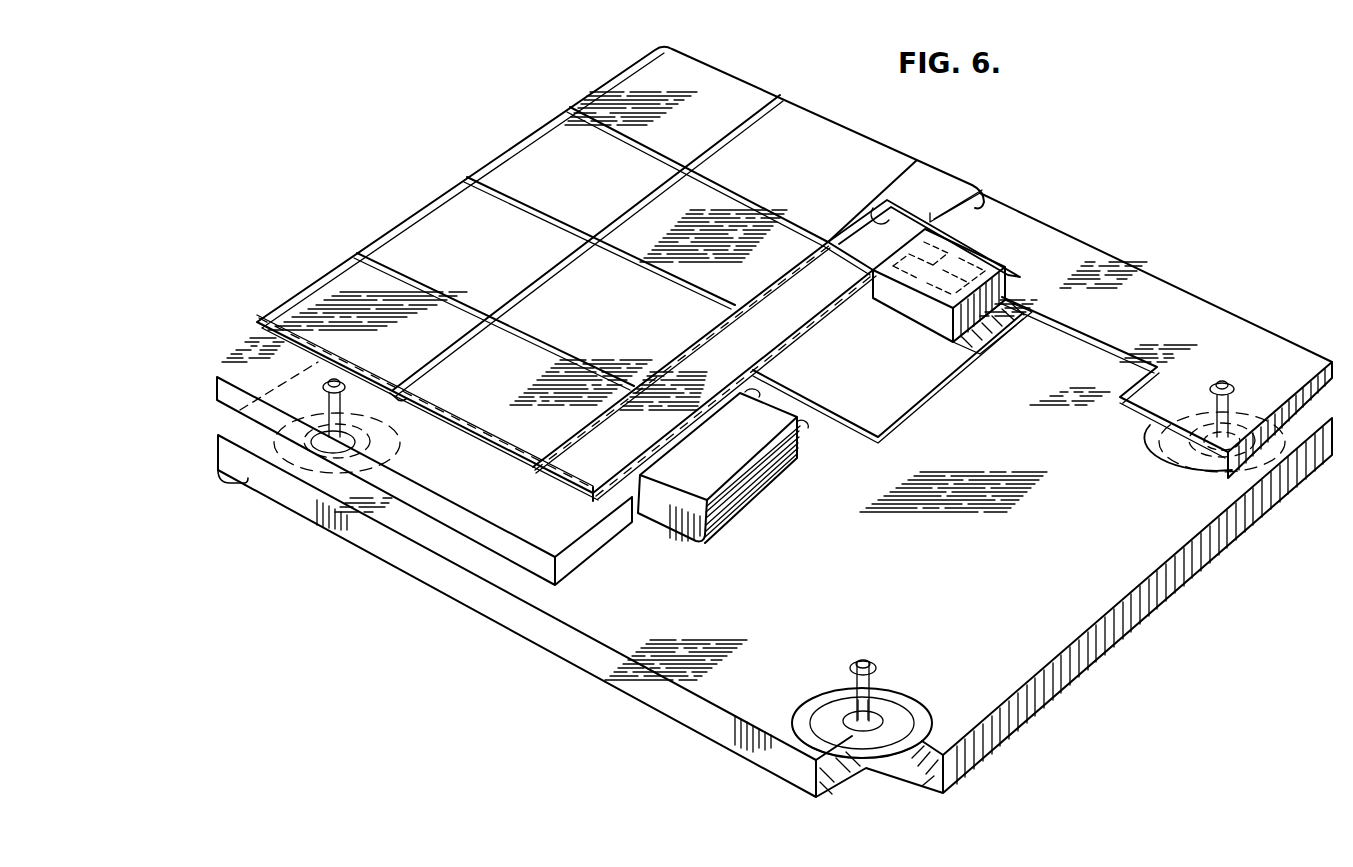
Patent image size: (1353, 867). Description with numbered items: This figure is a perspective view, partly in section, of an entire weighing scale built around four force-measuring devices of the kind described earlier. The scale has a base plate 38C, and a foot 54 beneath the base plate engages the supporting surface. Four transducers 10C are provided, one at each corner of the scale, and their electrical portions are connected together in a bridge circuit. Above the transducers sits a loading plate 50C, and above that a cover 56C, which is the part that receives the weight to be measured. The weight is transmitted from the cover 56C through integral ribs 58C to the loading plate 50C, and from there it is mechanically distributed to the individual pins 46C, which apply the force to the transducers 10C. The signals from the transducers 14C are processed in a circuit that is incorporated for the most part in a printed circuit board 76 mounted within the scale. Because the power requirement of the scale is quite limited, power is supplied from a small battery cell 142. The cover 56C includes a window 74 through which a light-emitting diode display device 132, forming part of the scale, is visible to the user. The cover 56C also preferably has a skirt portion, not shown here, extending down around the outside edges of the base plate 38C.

The base plate 38C is at (758, 758).
The loading plate 50C is at (433, 510).
The foot 54 is at (233, 481).
The cover 56C is at (523, 160).
The integral ribs 58C is at (402, 400).
The window 74 is at (896, 222).
The printed circuit board 76 is at (910, 370).
The light-emitting diode display device 132 is at (985, 258).
The battery cell 142 is at (747, 490).
The transducer 10C is at (303, 463).
The transducer 14C is at (830, 713).
The pin 46C is at (870, 687).